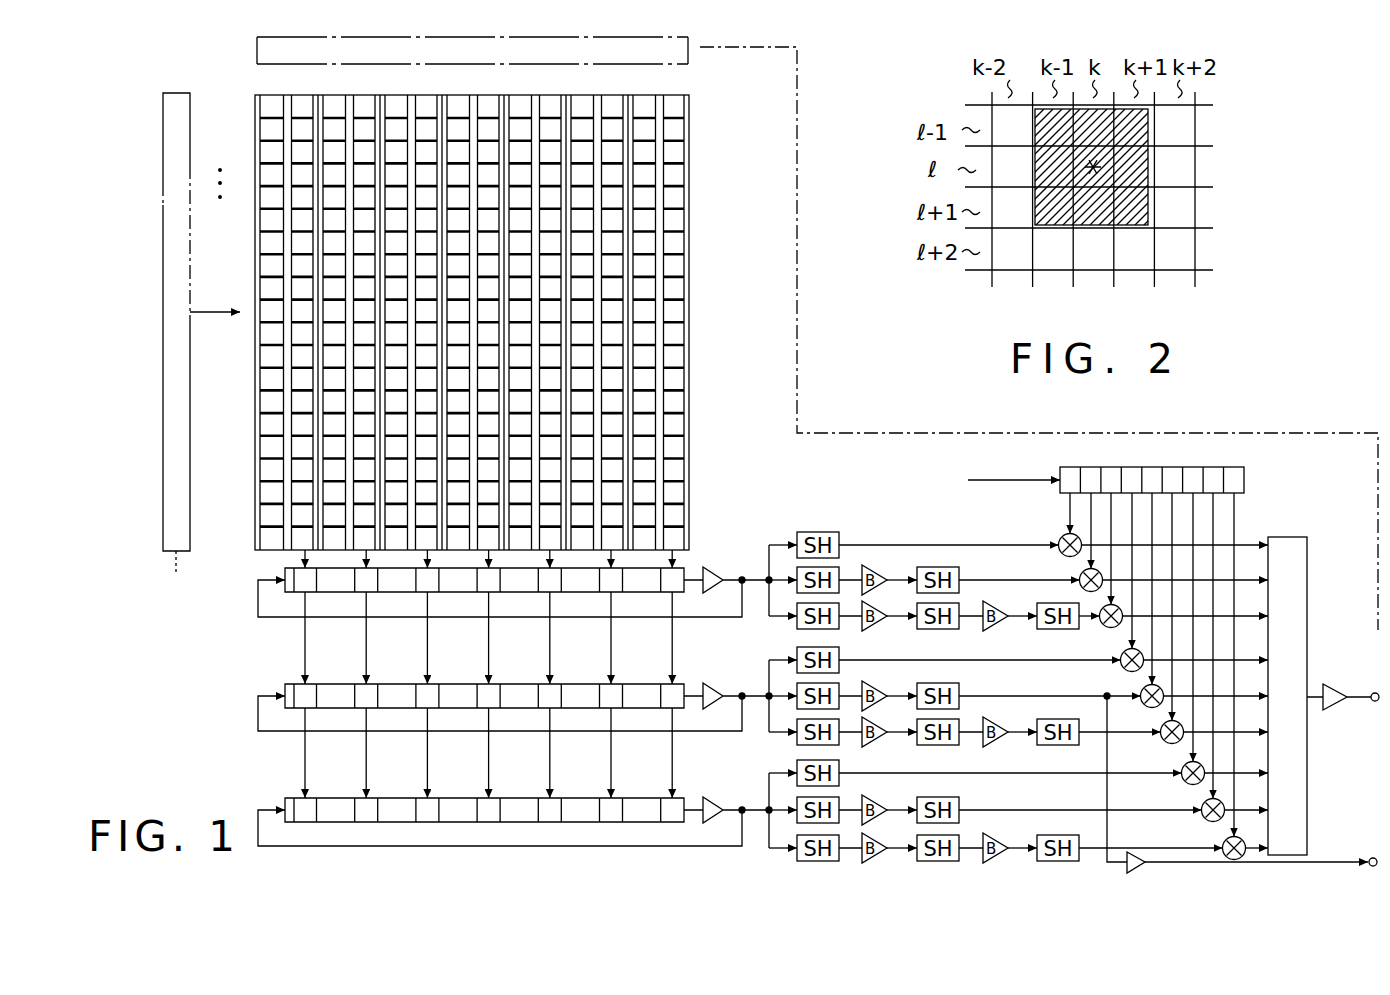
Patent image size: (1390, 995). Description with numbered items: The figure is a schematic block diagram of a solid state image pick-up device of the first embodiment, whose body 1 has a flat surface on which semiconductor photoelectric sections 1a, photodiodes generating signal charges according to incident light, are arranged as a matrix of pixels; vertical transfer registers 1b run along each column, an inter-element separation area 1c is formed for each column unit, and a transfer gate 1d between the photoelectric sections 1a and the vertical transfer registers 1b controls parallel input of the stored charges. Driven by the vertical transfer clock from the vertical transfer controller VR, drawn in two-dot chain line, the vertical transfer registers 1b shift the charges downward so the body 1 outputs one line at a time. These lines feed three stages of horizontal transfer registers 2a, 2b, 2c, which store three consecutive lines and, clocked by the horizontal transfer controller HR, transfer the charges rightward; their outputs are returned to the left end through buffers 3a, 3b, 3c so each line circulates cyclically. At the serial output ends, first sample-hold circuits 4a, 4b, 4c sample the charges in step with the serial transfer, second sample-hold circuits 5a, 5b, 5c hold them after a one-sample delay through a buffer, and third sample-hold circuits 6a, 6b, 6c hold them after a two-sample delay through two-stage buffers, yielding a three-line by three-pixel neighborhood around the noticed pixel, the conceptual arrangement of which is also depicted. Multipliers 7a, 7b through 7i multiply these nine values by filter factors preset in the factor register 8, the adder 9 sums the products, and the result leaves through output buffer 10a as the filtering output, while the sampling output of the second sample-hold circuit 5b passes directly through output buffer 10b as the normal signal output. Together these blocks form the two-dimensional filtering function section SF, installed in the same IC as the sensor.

The solid state image pick-up device body 1 is at (725, 308).
The semiconductor photoelectric section 1a is at (263, 155).
The vertical transfer register 1b is at (452, 98).
The inter-element separation area 1c is at (496, 104).
The transfer gate 1d is at (412, 107).
The horizontal transfer register 2a is at (285, 576).
The horizontal transfer register 2b is at (285, 692).
The horizontal transfer register 2c is at (288, 806).
The buffer 3a is at (714, 568).
The buffer 3b is at (716, 686).
The buffer 3c is at (732, 783).
The first sample-hold circuit 4a is at (840, 534).
The first sample-hold circuit 4b is at (840, 650).
The first sample-hold circuit 4c is at (840, 767).
The second sample-hold circuit 5a is at (959, 571).
The second sample-hold circuit 5b is at (959, 686).
The second sample-hold circuit 5c is at (959, 799).
The third sample-hold circuit 6a is at (948, 629).
The third sample-hold circuit 6b is at (948, 745).
The third sample-hold circuit 6c is at (957, 835).
The multiplier 7a is at (1060, 538).
The multiplier 7b is at (1081, 576).
The multiplier 7i is at (1222, 842).
The factor register 8 is at (1244, 485).
The adder 9 is at (1293, 537).
The output buffer 10a is at (1335, 684).
The output buffer 10b is at (1139, 842).
The horizontal transfer controller HR is at (690, 57).
The vertical transfer controller VR is at (178, 347).
The element IC is at (846, 433).
The two-dimensional filtering function section SF is at (737, 859).